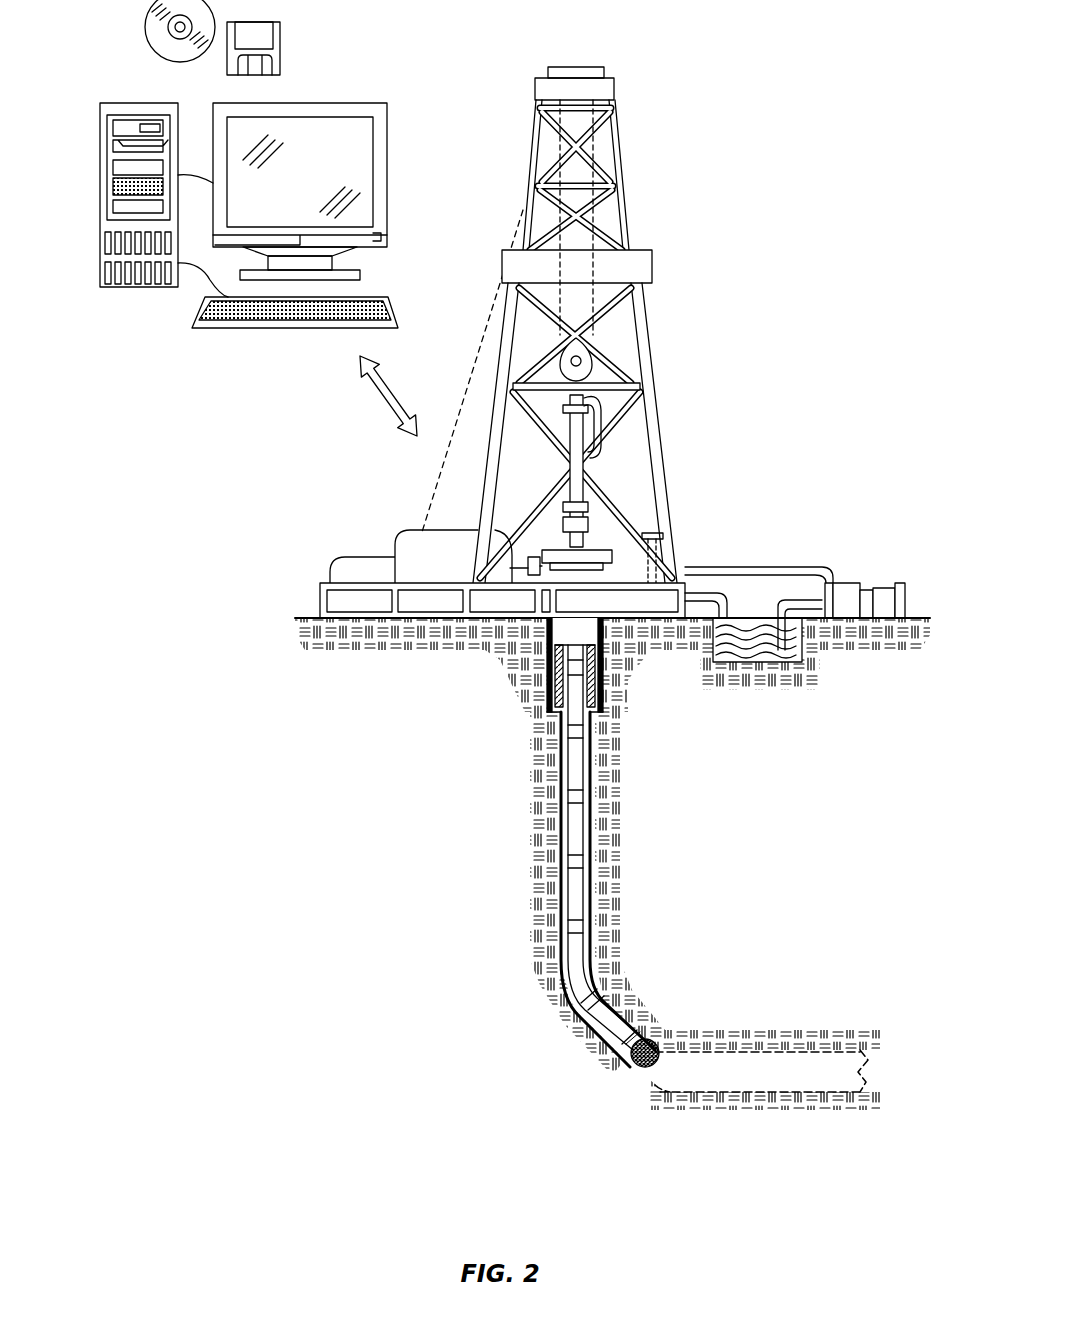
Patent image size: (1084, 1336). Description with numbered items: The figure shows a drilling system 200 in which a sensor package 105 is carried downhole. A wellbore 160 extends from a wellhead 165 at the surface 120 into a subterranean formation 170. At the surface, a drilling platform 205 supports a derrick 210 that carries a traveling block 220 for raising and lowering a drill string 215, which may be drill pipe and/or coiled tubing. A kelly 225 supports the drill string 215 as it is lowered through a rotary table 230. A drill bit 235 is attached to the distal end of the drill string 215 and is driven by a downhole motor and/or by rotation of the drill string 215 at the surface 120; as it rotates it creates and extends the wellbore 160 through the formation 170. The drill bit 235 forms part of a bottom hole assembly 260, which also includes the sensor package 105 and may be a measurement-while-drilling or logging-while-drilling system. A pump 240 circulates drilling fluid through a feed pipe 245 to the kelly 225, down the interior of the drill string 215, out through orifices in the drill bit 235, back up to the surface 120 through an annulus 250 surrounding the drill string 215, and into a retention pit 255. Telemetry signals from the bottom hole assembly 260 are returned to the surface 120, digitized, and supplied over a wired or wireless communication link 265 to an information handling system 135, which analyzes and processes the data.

The drilling system 200 is at (808, 165).
The derrick 210 is at (625, 205).
The traveling block 220 is at (595, 370).
The kelly 225 is at (580, 435).
The rotary table 230 is at (604, 548).
The wellhead 165 is at (614, 572).
The feed pipe 245 is at (782, 567).
The pump 240 is at (850, 585).
The surface 120 is at (913, 618).
The drilling platform 205 is at (320, 603).
The information handling system 135 is at (128, 364).
The communication link 265 is at (380, 403).
The retention pit 255 is at (752, 645).
The drill string 215 is at (590, 780).
The wellbore 160 is at (590, 797).
The subterranean formation 170 is at (750, 872).
The annulus 250 is at (553, 822).
The bottom hole assembly 260 is at (583, 1014).
The sensor package 105 is at (617, 1018).
The drill bit 235 is at (662, 1045).